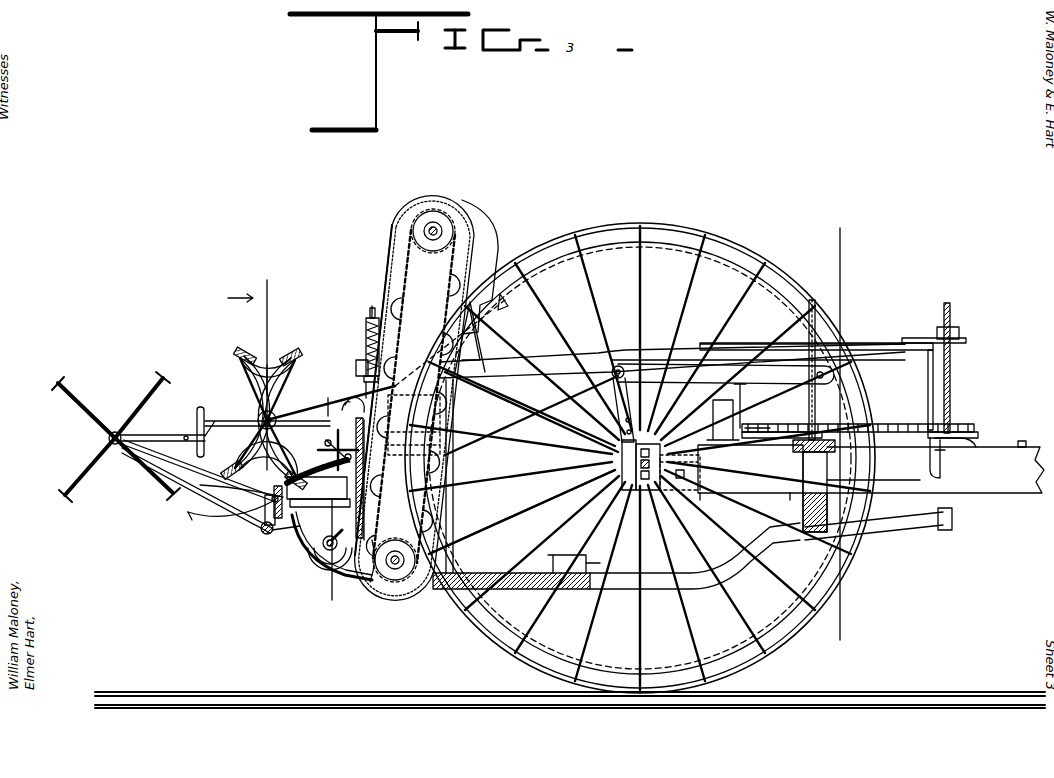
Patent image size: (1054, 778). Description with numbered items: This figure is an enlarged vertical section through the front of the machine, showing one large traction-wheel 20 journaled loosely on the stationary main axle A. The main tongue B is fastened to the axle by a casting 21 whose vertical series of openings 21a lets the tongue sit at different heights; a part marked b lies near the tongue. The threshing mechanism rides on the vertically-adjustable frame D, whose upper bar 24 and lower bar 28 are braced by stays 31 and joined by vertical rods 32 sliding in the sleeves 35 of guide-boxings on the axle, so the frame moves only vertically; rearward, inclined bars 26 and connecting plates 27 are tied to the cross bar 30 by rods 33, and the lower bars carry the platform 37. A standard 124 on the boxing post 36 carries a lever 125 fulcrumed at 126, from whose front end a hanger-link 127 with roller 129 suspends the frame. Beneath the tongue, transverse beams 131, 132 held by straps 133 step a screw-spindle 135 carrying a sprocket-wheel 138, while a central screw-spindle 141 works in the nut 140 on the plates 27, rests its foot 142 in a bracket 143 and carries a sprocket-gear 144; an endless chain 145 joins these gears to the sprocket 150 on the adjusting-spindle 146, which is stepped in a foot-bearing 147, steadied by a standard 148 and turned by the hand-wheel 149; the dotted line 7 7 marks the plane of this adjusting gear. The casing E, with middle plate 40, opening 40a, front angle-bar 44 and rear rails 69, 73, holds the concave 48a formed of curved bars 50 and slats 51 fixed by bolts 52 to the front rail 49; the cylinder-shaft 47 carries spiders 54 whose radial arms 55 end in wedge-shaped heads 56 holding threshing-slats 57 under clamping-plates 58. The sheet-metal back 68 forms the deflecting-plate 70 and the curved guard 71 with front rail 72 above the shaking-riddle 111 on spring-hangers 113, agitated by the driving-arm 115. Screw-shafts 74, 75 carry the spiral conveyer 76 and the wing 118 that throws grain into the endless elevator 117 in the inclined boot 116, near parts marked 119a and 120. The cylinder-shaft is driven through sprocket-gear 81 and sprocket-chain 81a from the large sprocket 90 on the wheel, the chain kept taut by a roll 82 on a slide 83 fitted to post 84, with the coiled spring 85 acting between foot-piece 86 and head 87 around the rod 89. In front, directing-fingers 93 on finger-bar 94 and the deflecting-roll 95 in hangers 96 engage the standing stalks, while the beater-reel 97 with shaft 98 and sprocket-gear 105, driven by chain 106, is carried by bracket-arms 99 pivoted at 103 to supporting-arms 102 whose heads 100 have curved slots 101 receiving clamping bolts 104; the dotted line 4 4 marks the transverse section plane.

The traction-wheels 20 is at (676, 232).
The large sprockets 90 is at (628, 252).
The vertical rods 32 is at (620, 530).
The stays 31 is at (536, 503).
The main carrying-axle A is at (620, 462).
The sleeves 35 is at (622, 480).
The casting 21 is at (700, 484).
The transverse openings 21a is at (690, 462).
The foot-bearing 147 is at (745, 482).
The levers 125 is at (548, 362).
The upper bar 24 is at (706, 348).
The fulcrum 126 is at (619, 366).
The hand-wheel 149 is at (782, 378).
The short standards 124 is at (618, 392).
The upstanding post 36 is at (600, 412).
The hanger-links 127 is at (448, 535).
The platform 37 is at (530, 590).
The lower side bar 28 is at (705, 590).
The vertically-adjustable frame D is at (760, 540).
The rollers 129 is at (548, 556).
The sprocket 150 is at (584, 565).
The vertically-adjusting spindle 146 is at (742, 387).
The standard 148 is at (708, 428).
The endless chain 145 is at (906, 424).
The sprocket-wheel 138 is at (818, 430).
The sprocket-gear 144 is at (962, 432).
The bracket 143 is at (968, 440).
The foot 142 is at (945, 454).
The upper transverse beam 132 is at (835, 450).
The straps or bolts 133 is at (828, 482).
The lower transverse beam 131 is at (802, 507).
The main tongue B is at (1010, 495).
The pin b is at (1030, 437).
The rear cross bar 30 is at (948, 532).
The inclined bars 26 is at (890, 343).
The connecting plates 27 is at (917, 338).
The vertical rods 33 is at (930, 410).
The central screw-spindle 141 is at (952, 380).
The nut 140 is at (958, 328).
The screw-spindle 135 is at (818, 330).
The section line 7 7 is at (839, 425).
The sprocket-chains 81a is at (740, 268).
The elevator boot or casing 116 is at (440, 190).
The endless elevator 117 is at (392, 276).
The upper sprocket 120 is at (440, 236).
The lower sprocket 119a is at (390, 582).
The coiled spring 85 is at (410, 330).
The concave 48a is at (384, 480).
The sheet-metal back 68 is at (386, 433).
The rear rail 69 is at (412, 425).
The screw-shaft 75 is at (366, 520).
The driving-arm 115 is at (378, 480).
The screw-shaft 74 is at (366, 582).
The slide 83 is at (366, 346).
The head 87 is at (370, 312).
The rod 89 is at (372, 303).
The roll 82 is at (356, 366).
The foot-piece 86 is at (362, 382).
The vertical post 84 is at (352, 391).
The curved guard 71 is at (357, 400).
The front rail 72 is at (345, 402).
The casing E is at (326, 400).
The cylinder-shaft 47 is at (262, 412).
The wedge-shaped heads 56 is at (258, 418).
The radial arms 55 is at (308, 374).
The spiders 54 is at (276, 392).
The threshing-slats 57 is at (246, 385).
The clamping-plates 58 is at (249, 413).
The sprocket-gears 81 is at (290, 412).
The bolt 104 is at (267, 429).
The beater-reel 97 is at (116, 437).
The sprocket-gear 105 is at (116, 432).
The reel shaft 98 is at (108, 439).
The bracket-arms 99 is at (150, 435).
The pivot 103 is at (173, 432).
The supporting-arms 102 is at (197, 490).
The enlarged heads 100 is at (190, 463).
The curved slots 101 is at (190, 466).
The chain 106 is at (192, 512).
The directing-fingers 93 is at (192, 518).
The finger-bar 94 is at (245, 520).
The hangers 96 is at (260, 530).
The deflecting-roll 95 is at (270, 533).
The middle plate 40 is at (245, 488).
The front rail 49 is at (283, 491).
The angle-bar 44 is at (270, 528).
The spiral conveyer 76 is at (312, 560).
The fixed rail 73 is at (330, 572).
The wing or blade 118 is at (324, 540).
The opening 40a is at (339, 559).
The shaking-riddle 111 is at (320, 511).
The spring-hangers 113 is at (317, 488).
The deflecting-plate 70 is at (317, 472).
The curved plates 50 is at (338, 448).
The slats or bars 51 is at (326, 442).
The bolts 52 is at (350, 452).
The section line 4 4 is at (280, 440).